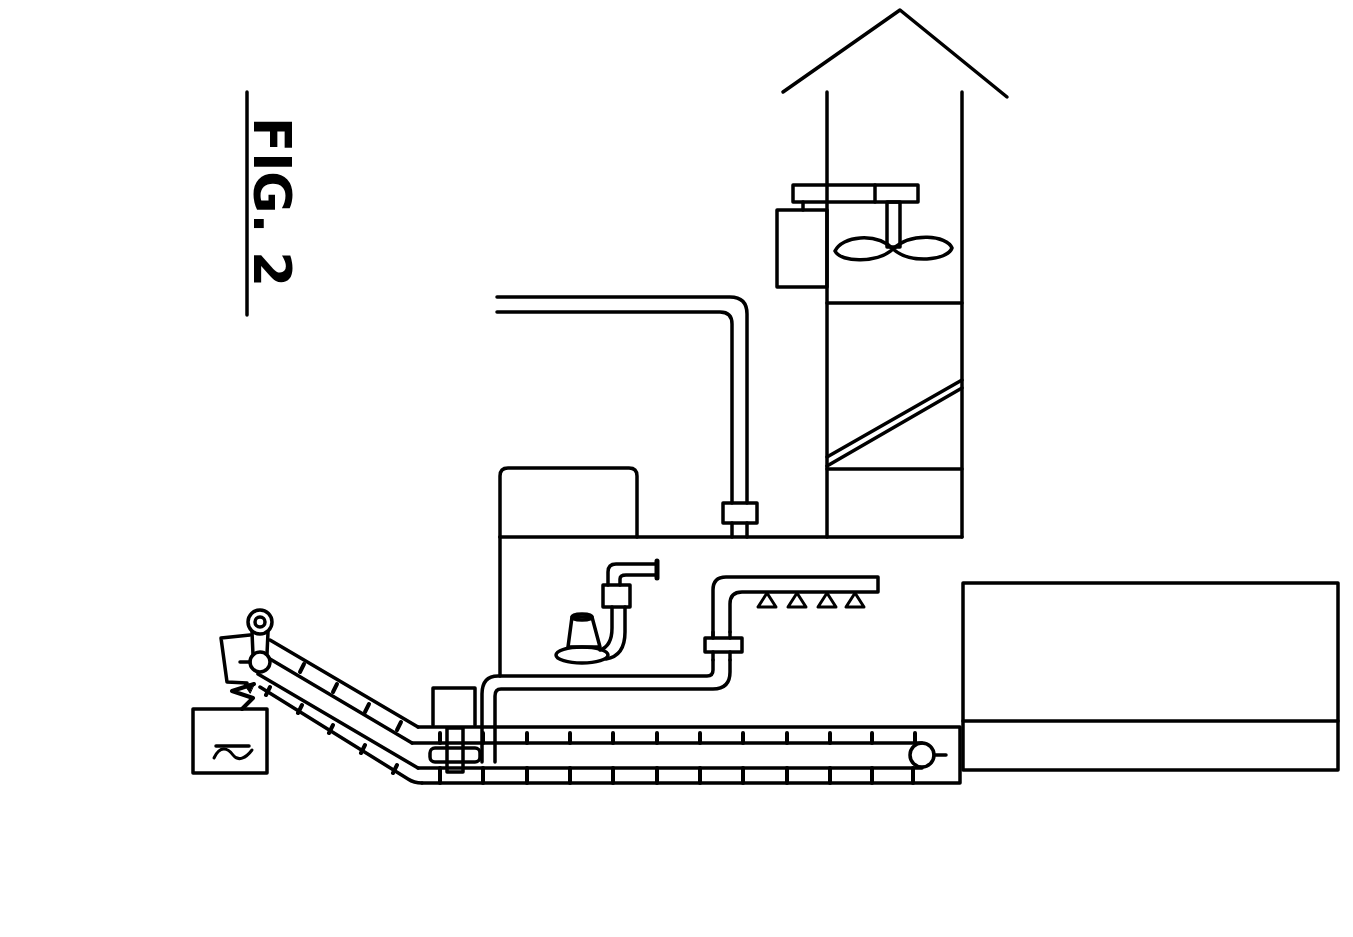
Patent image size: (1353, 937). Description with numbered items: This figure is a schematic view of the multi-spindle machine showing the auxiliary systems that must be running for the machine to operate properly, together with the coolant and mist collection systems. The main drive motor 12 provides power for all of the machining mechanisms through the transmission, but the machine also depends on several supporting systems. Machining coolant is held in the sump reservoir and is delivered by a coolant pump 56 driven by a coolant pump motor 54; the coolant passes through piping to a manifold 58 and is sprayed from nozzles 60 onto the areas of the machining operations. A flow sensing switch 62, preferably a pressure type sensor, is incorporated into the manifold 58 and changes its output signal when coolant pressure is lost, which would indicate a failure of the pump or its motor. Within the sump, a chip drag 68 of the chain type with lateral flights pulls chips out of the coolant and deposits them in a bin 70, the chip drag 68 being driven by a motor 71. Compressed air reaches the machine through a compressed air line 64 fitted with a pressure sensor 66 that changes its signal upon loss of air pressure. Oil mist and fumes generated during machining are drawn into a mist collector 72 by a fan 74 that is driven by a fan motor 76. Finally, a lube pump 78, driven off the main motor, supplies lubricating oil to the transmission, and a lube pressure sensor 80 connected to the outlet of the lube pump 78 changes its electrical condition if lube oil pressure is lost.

The main drive motor 12 is at (547, 468).
The coolant pump motor 54 is at (432, 688).
The coolant pump 56 is at (452, 783).
The manifold 58 is at (735, 608).
The nozzles 60 is at (853, 612).
The flow sensing switch 62 is at (743, 648).
The compressed air line 64 is at (592, 297).
The pressure sensor 66 is at (722, 512).
The chip drag 68 is at (807, 783).
The bin 70 is at (230, 728).
The motor 71 is at (262, 610).
The mist collector 72 is at (963, 365).
The fan 74 is at (940, 240).
The fan motor 76 is at (777, 222).
The lube pump 78 is at (565, 637).
The lube pressure sensor 80 is at (603, 597).